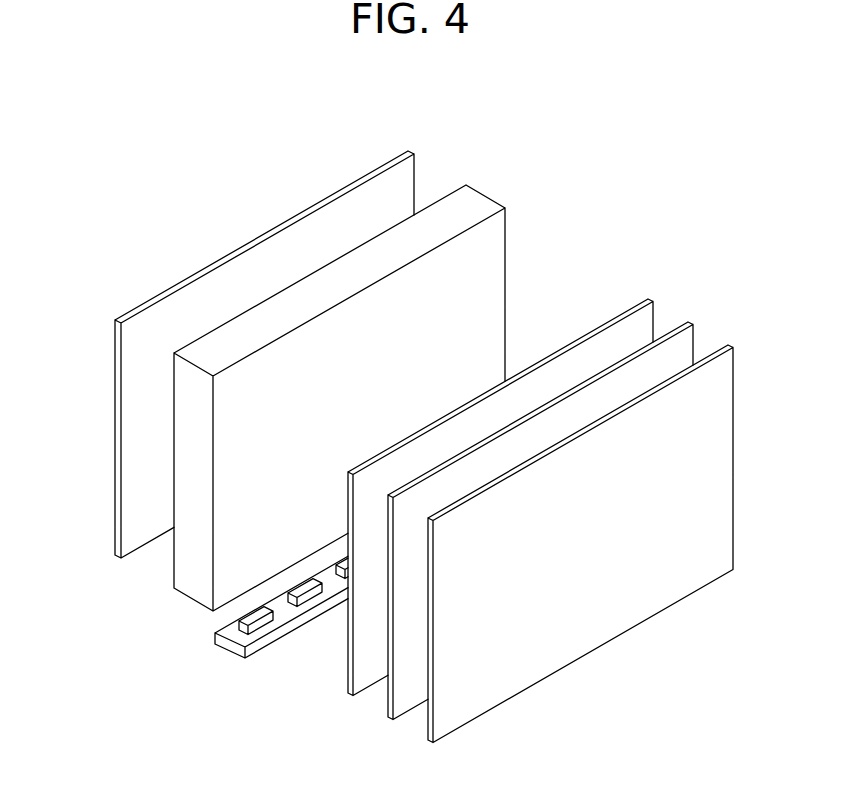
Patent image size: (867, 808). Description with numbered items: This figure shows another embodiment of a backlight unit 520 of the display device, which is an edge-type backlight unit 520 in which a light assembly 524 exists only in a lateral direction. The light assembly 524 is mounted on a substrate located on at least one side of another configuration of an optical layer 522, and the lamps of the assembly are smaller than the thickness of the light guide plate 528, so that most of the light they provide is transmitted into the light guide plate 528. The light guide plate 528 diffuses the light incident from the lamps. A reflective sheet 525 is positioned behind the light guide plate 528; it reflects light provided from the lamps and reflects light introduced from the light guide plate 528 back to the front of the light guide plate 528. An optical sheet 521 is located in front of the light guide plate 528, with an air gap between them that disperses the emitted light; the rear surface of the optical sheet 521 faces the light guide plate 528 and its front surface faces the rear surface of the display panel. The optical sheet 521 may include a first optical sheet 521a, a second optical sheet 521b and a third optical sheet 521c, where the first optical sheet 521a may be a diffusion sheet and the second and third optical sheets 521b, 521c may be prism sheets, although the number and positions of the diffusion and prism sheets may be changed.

The backlight unit 520 is at (206, 139).
The optical sheet 521 is at (792, 282).
The first optical sheet 521a is at (732, 345).
The second optical sheet 521b is at (692, 322).
The third optical sheet 521c is at (652, 297).
The optical layer 522 is at (182, 706).
The light assembly 524 is at (238, 633).
The reflective sheet 525 is at (113, 556).
The light guide plate 528 is at (192, 580).